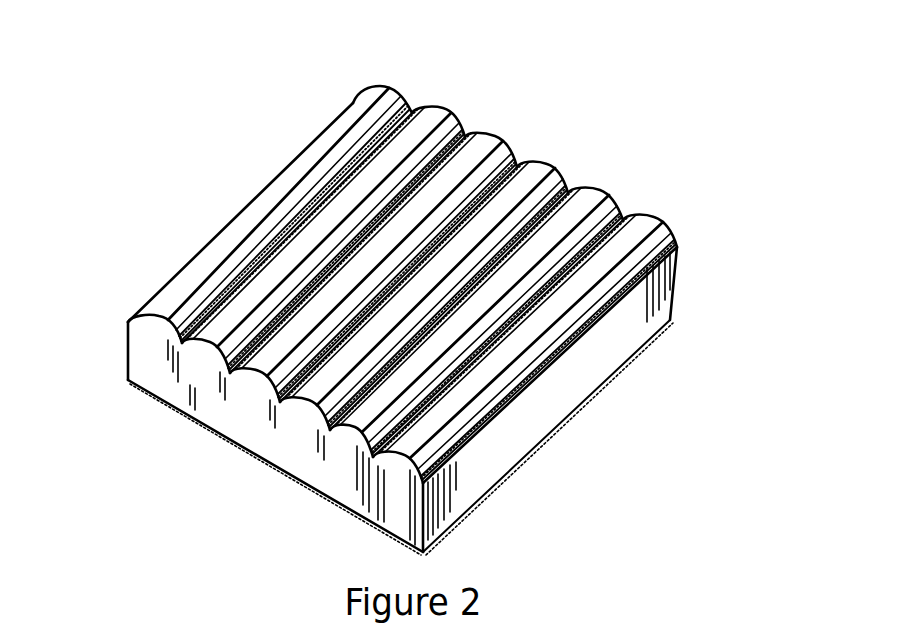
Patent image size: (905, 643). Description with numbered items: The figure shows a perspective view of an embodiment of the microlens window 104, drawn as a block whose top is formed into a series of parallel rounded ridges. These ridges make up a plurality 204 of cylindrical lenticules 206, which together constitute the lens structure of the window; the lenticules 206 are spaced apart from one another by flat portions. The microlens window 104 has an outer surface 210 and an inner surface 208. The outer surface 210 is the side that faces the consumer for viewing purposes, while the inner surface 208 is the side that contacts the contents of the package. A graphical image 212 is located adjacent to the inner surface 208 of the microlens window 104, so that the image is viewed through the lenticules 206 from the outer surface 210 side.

The microlens window 104 is at (400, 305).
The plurality of cylindrical lenticules 204 is at (533, 140).
The cylindrical lenticule 206 is at (330, 143).
The inner surface 208 is at (128, 382).
The outer surface 210 is at (657, 217).
The graphical image 212 is at (367, 518).